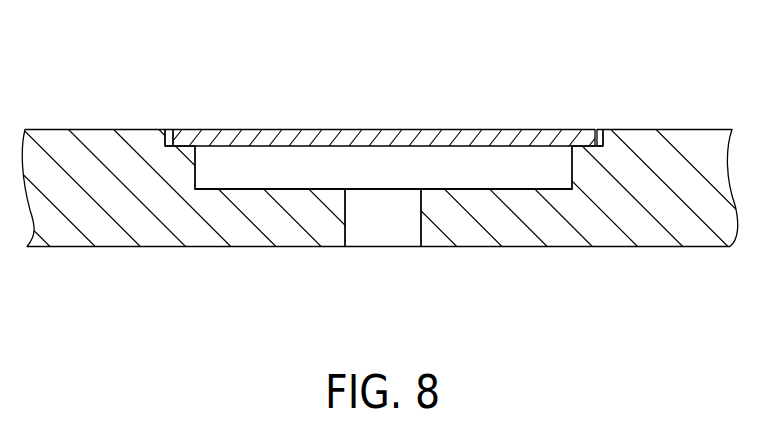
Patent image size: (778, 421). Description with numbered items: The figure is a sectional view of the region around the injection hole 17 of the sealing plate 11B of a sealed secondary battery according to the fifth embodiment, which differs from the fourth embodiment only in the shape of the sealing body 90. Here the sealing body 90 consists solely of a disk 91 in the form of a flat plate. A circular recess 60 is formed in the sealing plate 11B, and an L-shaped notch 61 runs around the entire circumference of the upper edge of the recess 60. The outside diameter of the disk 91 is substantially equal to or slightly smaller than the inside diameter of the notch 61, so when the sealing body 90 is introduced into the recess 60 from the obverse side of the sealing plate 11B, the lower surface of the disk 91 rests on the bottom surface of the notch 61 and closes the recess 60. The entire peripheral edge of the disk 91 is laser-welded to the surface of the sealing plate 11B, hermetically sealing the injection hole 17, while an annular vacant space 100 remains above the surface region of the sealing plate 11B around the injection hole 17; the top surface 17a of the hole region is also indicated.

The sealing plate 11B is at (687, 129).
The circular recess 60 is at (195, 172).
The L-shaped notch 61 is at (165, 130).
The injection hole 17 is at (387, 240).
The top surface of pillar 17a is at (366, 189).
The sealing body 90 is at (373, 88).
The disk 91 is at (383, 128).
The annular vacant space 100 is at (315, 189).